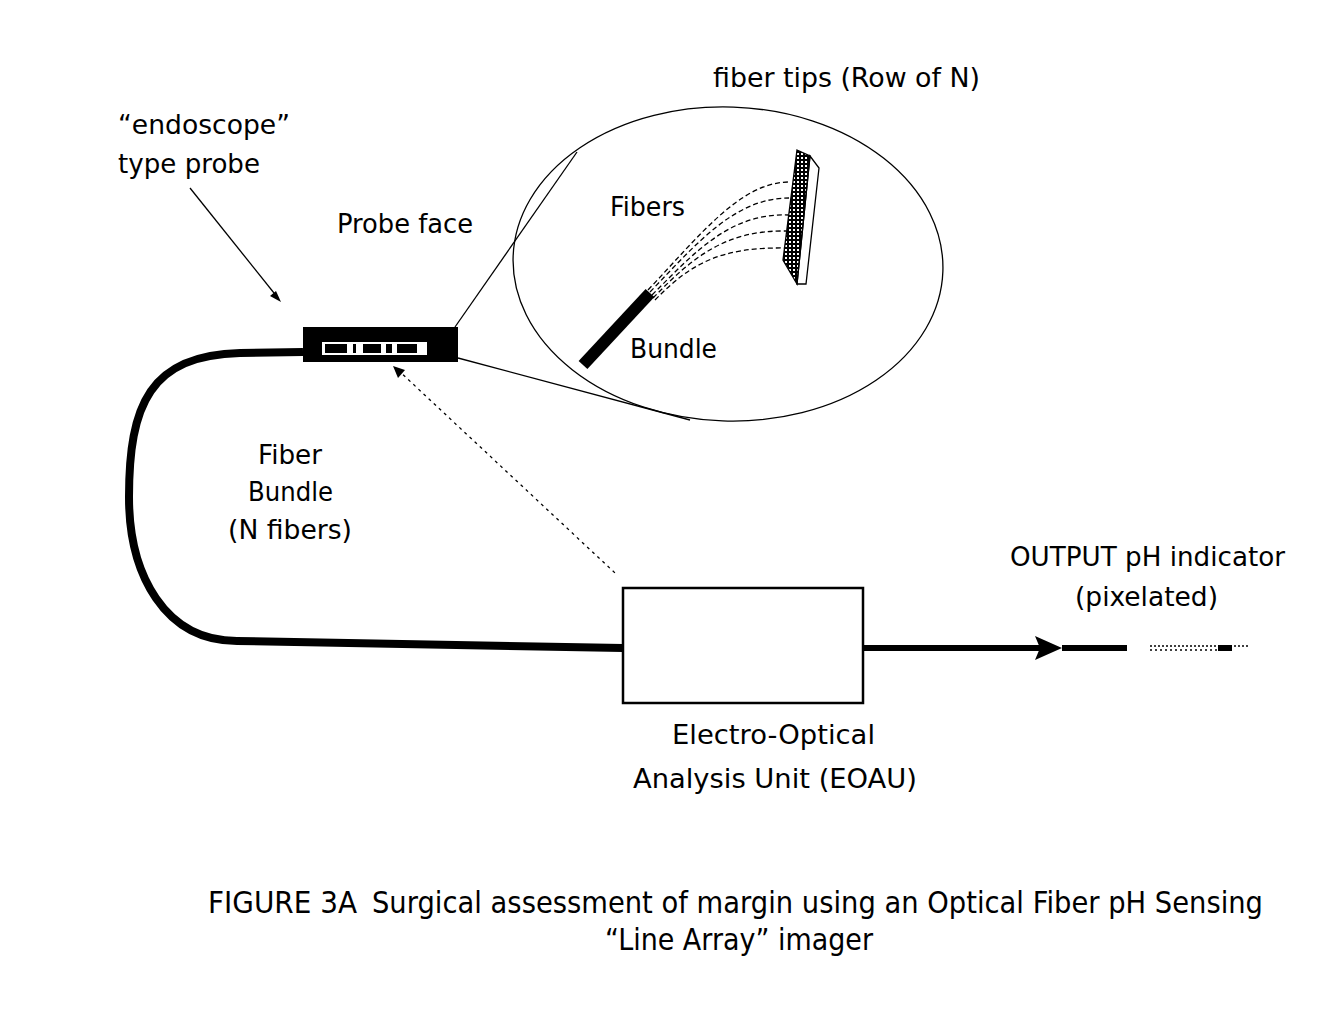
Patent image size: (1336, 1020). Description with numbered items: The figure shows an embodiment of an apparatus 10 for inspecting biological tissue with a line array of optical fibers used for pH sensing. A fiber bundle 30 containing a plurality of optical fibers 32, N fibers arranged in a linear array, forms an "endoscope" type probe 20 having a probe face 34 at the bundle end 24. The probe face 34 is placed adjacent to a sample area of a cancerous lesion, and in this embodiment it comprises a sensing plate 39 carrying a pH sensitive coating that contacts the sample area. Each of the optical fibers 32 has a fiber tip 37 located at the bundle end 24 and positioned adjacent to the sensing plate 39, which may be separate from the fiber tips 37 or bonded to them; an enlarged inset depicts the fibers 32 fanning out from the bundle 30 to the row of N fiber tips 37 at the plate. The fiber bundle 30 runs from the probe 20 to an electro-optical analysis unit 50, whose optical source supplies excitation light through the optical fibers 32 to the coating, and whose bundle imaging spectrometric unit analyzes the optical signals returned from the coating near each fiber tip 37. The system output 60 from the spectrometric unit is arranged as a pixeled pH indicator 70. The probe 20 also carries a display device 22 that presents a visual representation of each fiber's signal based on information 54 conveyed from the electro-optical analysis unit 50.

The apparatus 10 is at (468, 147).
The endoscope type probe 20 is at (362, 316).
The display device 22 is at (368, 362).
The bundle end 24 is at (750, 187).
The fiber bundle 30 is at (147, 402).
The optical fibers 32 is at (672, 251).
The probe face 34 is at (452, 322).
The fiber tip 37 is at (800, 150).
The sensing plate 39 is at (815, 192).
The electro-optical analysis unit 50 is at (800, 588).
The information 54 is at (513, 477).
The system output 60 is at (1010, 664).
The pixeled pH indicator 70 is at (1155, 665).